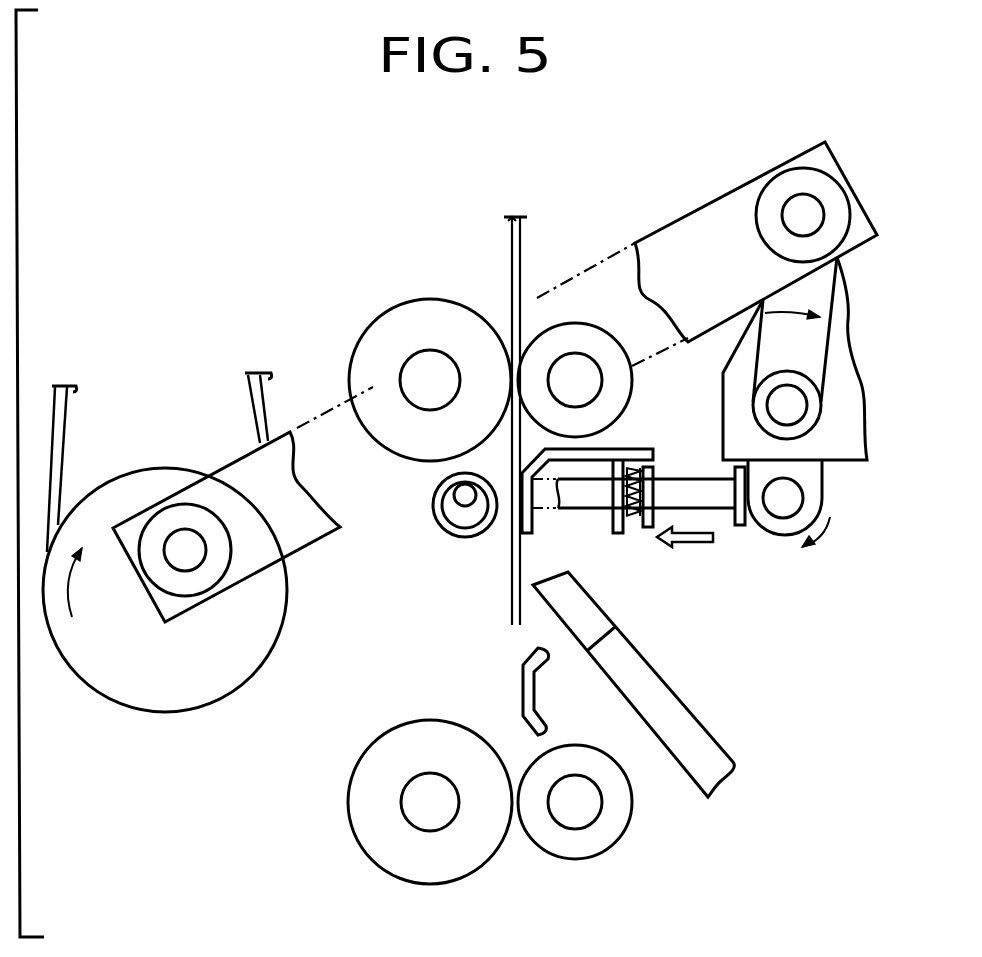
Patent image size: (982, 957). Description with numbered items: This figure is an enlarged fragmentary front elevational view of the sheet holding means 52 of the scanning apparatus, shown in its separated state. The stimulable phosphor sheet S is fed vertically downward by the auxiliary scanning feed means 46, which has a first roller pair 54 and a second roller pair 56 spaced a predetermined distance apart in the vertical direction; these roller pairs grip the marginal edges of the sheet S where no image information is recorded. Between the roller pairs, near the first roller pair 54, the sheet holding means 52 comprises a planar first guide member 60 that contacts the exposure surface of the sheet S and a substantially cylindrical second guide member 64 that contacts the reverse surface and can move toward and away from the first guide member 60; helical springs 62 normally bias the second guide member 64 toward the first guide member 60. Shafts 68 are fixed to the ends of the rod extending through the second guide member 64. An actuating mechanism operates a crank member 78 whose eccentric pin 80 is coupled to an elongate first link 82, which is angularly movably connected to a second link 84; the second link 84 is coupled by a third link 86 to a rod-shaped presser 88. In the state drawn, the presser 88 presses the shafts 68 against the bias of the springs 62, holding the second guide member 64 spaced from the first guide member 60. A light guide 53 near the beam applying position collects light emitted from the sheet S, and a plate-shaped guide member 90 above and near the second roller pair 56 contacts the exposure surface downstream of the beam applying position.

The stimulable phosphor sheet S is at (512, 247).
The auxiliary scanning feed means 46 is at (444, 338).
The sheet holding means 52 is at (404, 569).
The light guide 53 is at (668, 695).
The first roller pair 54 is at (420, 320).
The second roller pair 56 is at (433, 863).
The first guide member 60 is at (630, 442).
The helical springs 62 is at (632, 514).
The second guide member 64 is at (442, 535).
The shafts 68 is at (723, 503).
The crank member 78 is at (178, 693).
The eccentric pin 80 is at (193, 557).
The first link 82 is at (707, 220).
The second link 84 is at (813, 350).
The third link 86 is at (812, 490).
The presser 88 is at (772, 527).
The guide member 90 is at (538, 690).